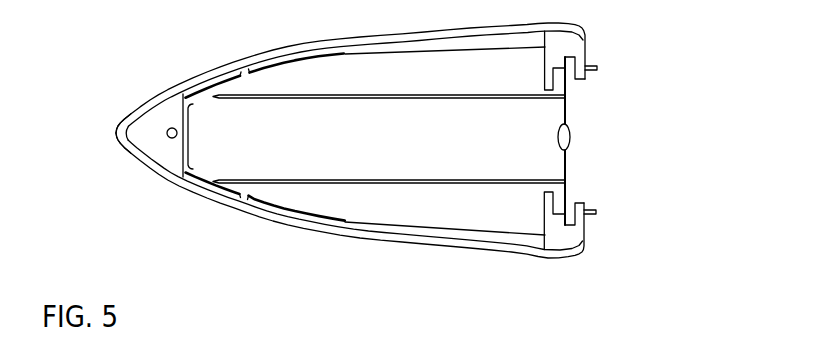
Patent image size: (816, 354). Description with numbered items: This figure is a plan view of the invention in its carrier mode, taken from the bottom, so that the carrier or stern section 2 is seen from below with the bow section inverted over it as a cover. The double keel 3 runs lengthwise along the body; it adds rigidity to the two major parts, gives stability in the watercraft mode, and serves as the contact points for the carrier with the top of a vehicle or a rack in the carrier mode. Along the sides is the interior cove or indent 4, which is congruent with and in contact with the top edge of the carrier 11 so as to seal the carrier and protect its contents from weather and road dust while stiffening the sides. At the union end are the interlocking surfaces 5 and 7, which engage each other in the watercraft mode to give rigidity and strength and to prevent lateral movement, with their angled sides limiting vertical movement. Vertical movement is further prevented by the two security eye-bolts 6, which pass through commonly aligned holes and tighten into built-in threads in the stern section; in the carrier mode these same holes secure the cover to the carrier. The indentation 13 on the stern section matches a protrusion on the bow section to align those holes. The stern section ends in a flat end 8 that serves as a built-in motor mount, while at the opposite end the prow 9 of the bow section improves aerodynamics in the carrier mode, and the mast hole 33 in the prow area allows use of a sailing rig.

The carrier or stern section 2 is at (386, 159).
The double keel 3 is at (453, 100).
The interior cove or indent 4 is at (245, 72).
The interlocking surface 5 is at (569, 100).
The security eye-bolt 6 is at (603, 68).
The interlocking surface 7 is at (562, 117).
The flat end 8 is at (182, 124).
The prow 9 is at (112, 130).
The top edge of the carrier 11 is at (265, 67).
The indentation 13 is at (557, 135).
The mast hole 33 is at (168, 141).